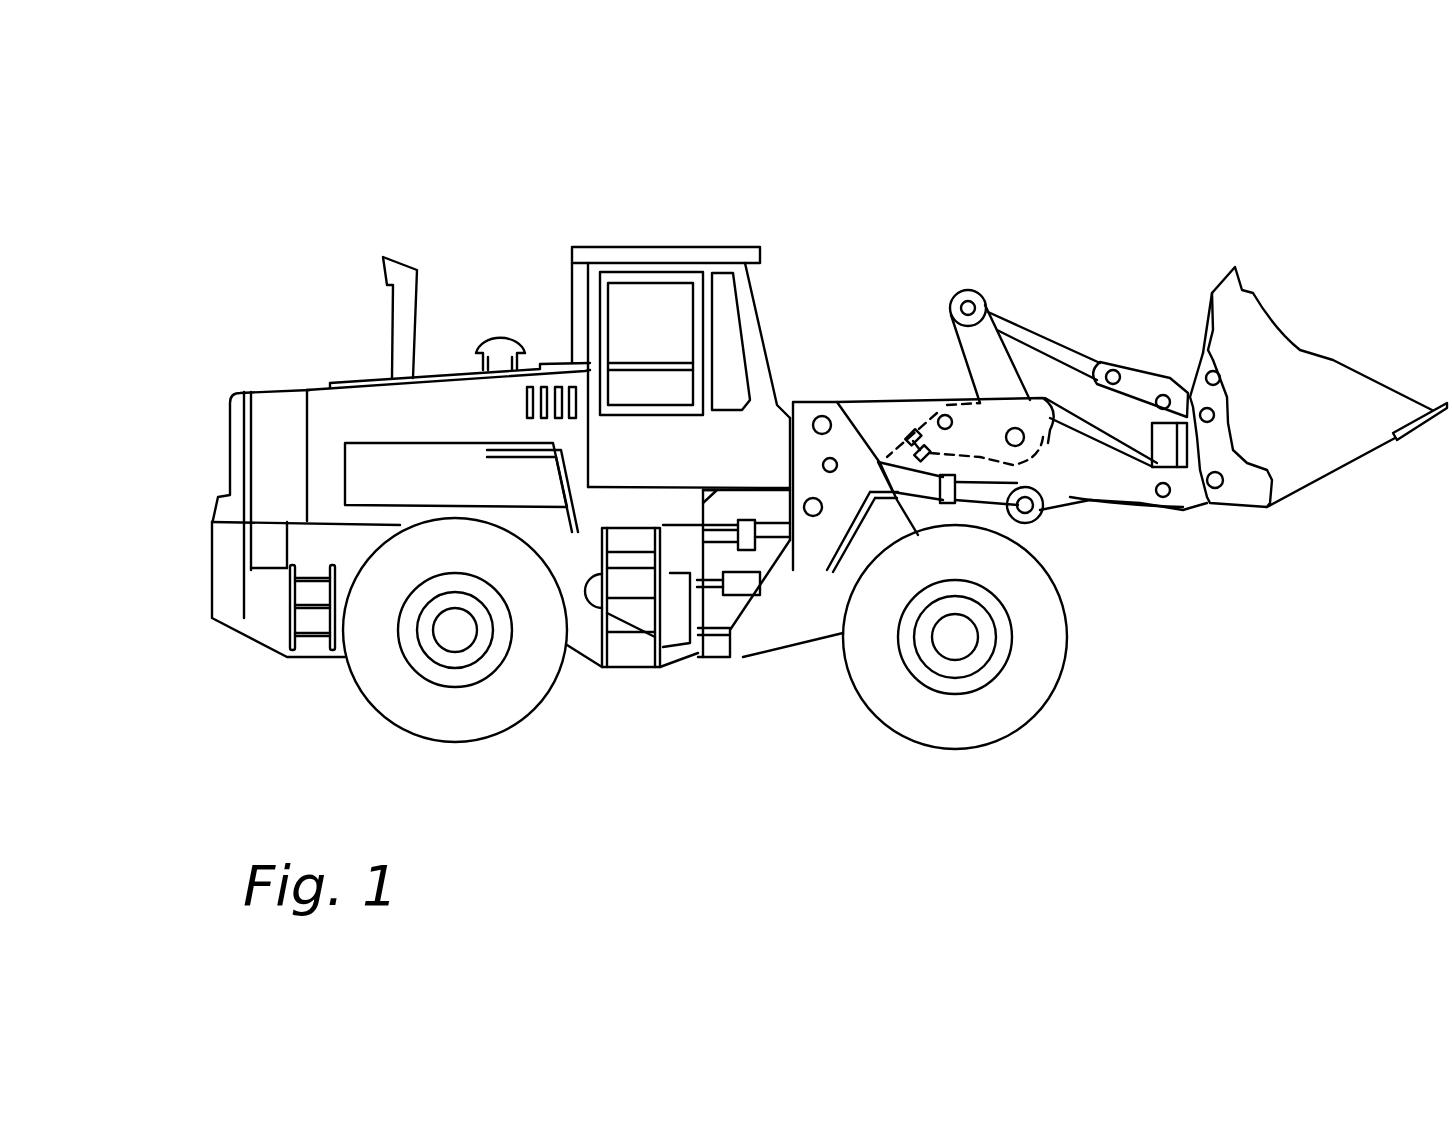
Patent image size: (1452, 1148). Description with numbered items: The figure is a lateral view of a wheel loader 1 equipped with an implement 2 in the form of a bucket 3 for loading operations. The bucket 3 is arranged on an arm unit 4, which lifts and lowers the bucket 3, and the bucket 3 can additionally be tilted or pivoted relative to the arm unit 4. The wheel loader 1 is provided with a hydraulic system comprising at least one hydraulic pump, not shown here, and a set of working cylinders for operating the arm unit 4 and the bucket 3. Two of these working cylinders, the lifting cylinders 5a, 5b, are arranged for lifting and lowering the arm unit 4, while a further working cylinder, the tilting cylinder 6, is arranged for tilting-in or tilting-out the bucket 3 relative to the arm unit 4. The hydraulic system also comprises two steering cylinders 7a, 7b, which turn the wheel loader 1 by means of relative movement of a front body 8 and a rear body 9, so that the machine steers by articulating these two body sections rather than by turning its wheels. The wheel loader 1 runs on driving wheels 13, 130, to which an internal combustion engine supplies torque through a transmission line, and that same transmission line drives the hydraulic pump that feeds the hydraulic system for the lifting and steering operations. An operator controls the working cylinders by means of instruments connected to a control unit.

The wheel loader 1 is at (328, 200).
The implement 2 is at (1150, 326).
The bucket 3 is at (1307, 433).
The arm unit 4 is at (1093, 472).
The lifting cylinder 5a is at (1012, 553).
The lifting cylinder 5b is at (987, 503).
The tilting cylinder 6 is at (902, 433).
The steering cylinder 7a is at (818, 653).
The steering cylinder 7b is at (775, 540).
The front body 8 is at (757, 647).
The rear body 9 is at (268, 617).
The driving wheels 13 is at (402, 651).
The driving wheels 130 is at (437, 633).